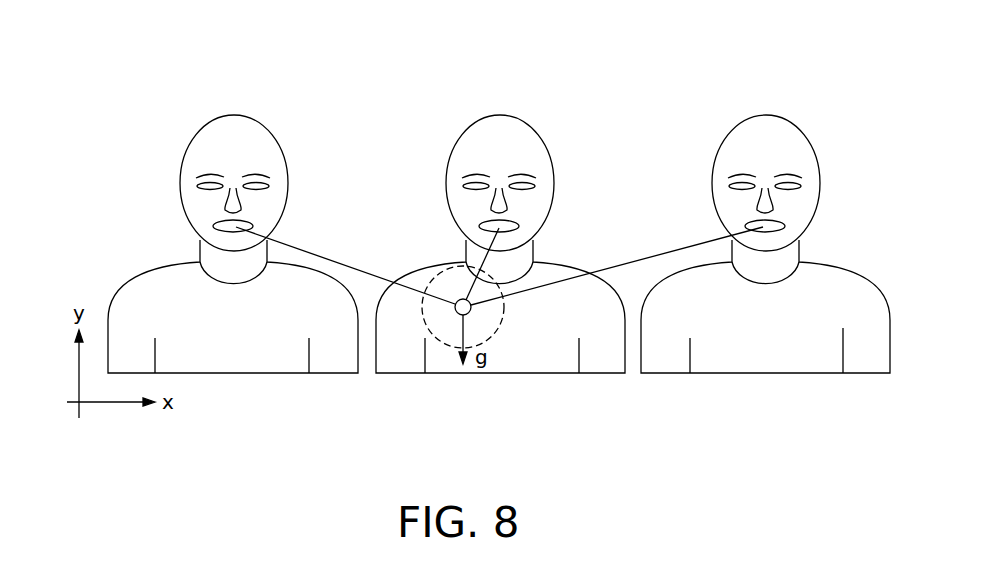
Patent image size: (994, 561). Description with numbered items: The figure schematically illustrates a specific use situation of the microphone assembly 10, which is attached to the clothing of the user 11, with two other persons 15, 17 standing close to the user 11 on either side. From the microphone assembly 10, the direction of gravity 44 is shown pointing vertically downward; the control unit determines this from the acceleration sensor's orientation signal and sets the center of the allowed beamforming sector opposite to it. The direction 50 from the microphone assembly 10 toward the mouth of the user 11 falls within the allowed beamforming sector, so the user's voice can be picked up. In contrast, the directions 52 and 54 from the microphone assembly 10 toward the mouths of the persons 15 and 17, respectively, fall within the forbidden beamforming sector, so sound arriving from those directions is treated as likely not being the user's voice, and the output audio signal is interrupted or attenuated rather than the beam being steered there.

The other person 15 is at (240, 128).
The user 11 is at (502, 130).
The other person 17 is at (763, 128).
The direction of the mouth of person 15 52 is at (313, 253).
The direction of the mouth of the user 50 is at (470, 262).
The direction of the mouth of person 17 54 is at (687, 247).
The microphone assembly 10 is at (458, 314).
The direction of gravity 44 is at (463, 327).